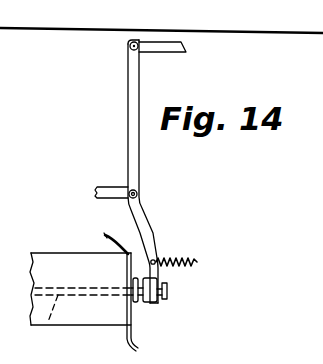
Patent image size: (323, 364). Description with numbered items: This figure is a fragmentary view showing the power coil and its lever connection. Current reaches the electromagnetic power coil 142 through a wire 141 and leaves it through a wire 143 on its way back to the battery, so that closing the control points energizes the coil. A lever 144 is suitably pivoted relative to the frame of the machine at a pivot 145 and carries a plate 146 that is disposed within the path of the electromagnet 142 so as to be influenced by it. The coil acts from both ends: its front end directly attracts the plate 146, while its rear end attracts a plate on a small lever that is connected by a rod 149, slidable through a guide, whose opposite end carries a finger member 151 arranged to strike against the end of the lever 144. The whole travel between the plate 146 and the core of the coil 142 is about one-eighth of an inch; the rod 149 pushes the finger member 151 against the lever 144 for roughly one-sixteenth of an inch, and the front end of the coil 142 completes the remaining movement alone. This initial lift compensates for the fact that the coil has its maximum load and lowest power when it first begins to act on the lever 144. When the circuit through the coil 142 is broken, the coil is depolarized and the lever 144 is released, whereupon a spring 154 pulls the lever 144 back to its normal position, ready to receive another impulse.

The wire 141 is at (106, 235).
The electromagnetic power coil 142 is at (93, 326).
The wire 143 is at (132, 345).
The lever 144 is at (147, 241).
The pivot 145 is at (138, 194).
The plate 146 is at (147, 303).
The rod 149 is at (47, 332).
The finger member 151 is at (168, 292).
The spring 154 is at (197, 259).